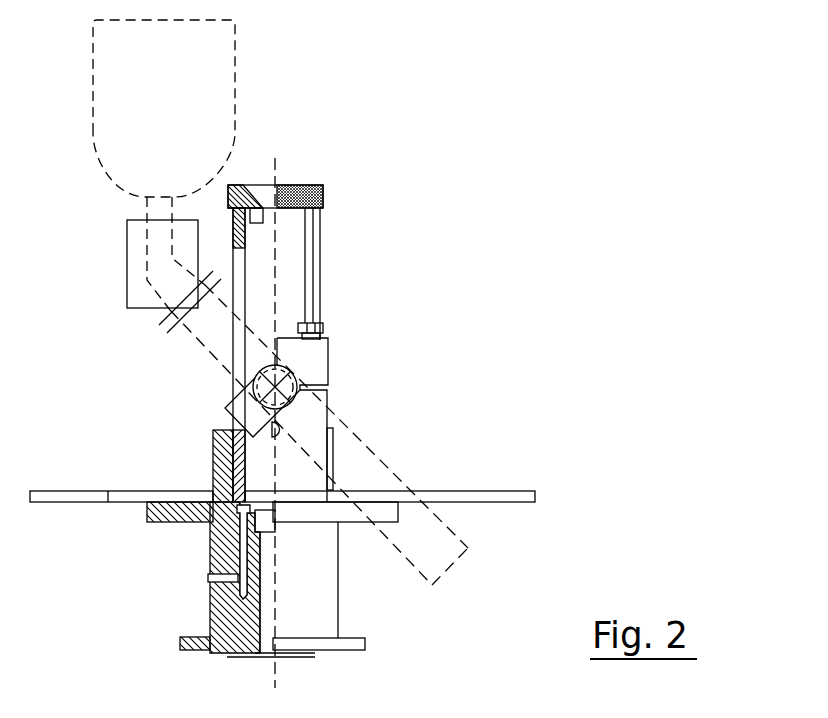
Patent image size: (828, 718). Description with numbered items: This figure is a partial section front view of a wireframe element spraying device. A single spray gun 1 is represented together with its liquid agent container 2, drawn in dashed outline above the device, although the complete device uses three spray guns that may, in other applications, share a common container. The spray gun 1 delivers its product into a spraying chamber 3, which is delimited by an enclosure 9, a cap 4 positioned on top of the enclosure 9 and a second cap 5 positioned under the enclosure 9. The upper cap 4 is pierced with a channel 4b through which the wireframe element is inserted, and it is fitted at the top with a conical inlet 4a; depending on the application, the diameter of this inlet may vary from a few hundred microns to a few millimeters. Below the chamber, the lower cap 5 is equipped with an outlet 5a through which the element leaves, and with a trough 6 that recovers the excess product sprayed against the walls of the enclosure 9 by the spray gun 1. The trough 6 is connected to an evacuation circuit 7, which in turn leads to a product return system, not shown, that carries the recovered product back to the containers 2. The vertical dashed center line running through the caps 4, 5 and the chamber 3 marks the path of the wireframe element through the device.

The spray gun 1 is at (190, 352).
The liquid agent container 2 is at (171, 115).
The spraying chamber 3 is at (271, 301).
The cap 4 is at (300, 193).
The conical inlet 4a is at (248, 193).
The channel 4b is at (264, 220).
The cap 5 is at (213, 455).
The outlet 5a is at (275, 533).
The trough 6 is at (273, 580).
The evacuation circuit 7 is at (237, 578).
The enclosure 9 is at (245, 238).